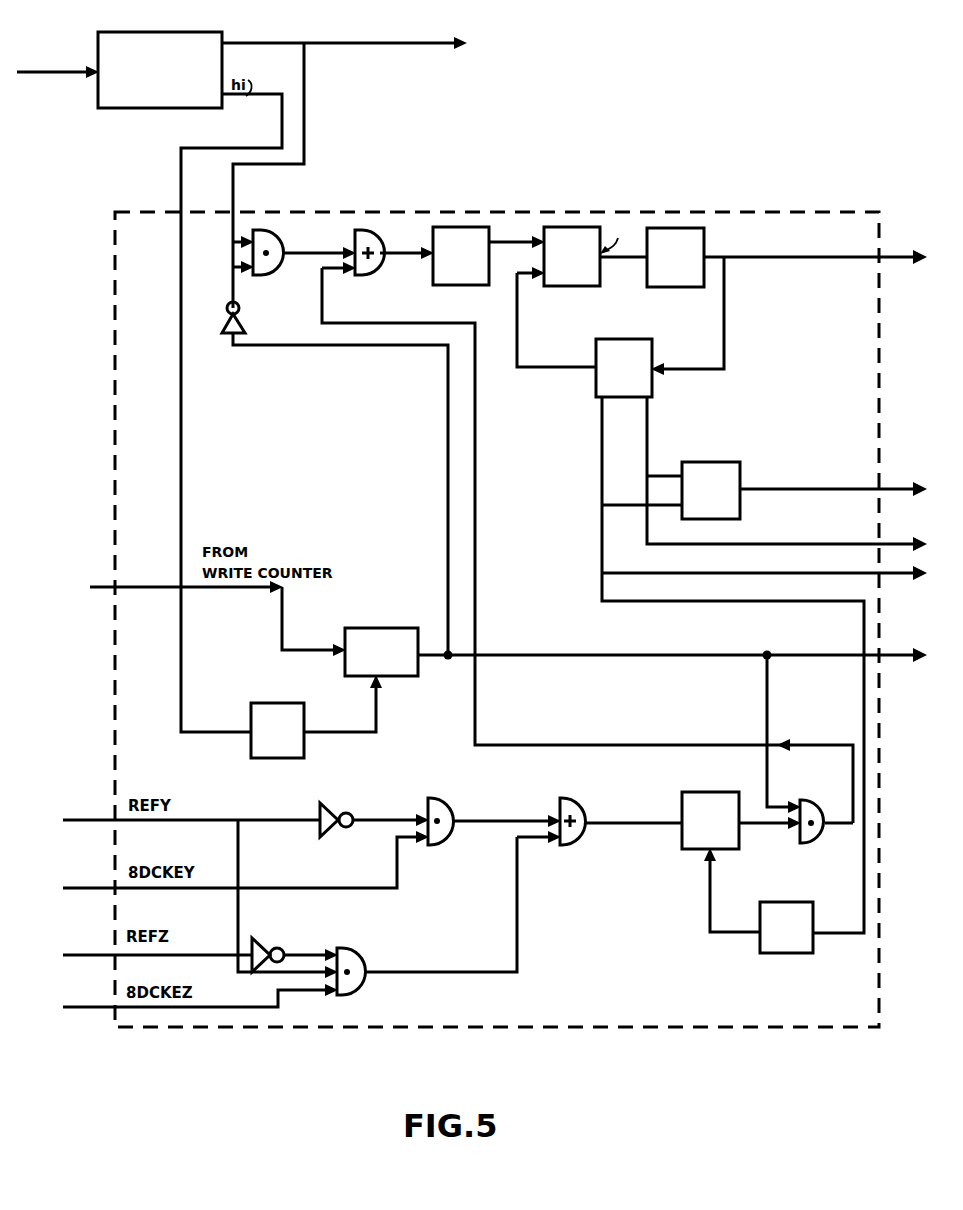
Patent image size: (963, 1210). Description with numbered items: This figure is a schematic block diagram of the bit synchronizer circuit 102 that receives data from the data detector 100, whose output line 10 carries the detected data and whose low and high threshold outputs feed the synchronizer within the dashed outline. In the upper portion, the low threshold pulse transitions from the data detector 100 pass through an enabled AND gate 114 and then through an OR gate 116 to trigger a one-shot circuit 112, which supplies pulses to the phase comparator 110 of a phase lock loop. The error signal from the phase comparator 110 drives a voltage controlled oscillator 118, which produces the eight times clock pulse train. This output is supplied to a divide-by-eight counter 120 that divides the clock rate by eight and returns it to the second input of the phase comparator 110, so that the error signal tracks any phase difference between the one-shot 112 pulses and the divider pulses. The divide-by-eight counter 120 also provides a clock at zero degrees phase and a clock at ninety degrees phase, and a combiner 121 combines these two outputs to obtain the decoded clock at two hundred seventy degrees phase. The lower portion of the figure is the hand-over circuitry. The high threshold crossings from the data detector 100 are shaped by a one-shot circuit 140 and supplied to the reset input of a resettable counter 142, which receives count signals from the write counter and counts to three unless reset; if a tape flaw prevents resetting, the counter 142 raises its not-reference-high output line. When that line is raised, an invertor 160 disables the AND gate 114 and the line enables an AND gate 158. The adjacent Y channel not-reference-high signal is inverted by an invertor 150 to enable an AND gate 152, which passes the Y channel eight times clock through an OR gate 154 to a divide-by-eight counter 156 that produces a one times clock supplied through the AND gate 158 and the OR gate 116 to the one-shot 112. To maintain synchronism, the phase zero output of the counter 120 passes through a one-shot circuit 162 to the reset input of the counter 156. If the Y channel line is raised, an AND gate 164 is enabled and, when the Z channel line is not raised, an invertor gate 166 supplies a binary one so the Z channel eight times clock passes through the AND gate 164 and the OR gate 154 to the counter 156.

The data detector 100 is at (170, 32).
The data output line 10 is at (226, 43).
The bit synchronizer circuit 102 is at (338, 212).
The AND gate 114 is at (274, 218).
The OR gate 116 is at (378, 218).
The one-shot circuit 112 is at (452, 227).
The phase comparator 110 is at (560, 227).
The voltage controlled oscillator 118 is at (672, 228).
The divide-by-eight counter 120 is at (630, 339).
The combiner 121 is at (710, 462).
The invertor 160 is at (238, 322).
The resettable counter 142 is at (358, 628).
The one-shot circuit 140 is at (290, 758).
The invertor 150 is at (334, 790).
The AND gate 152 is at (444, 784).
The OR gate 154 is at (570, 798).
The divide-by-eight counter 156 is at (690, 849).
The AND gate 158 is at (804, 843).
The one-shot circuit 162 is at (760, 950).
The AND gate 164 is at (358, 952).
The invertor gate 166 is at (282, 948).